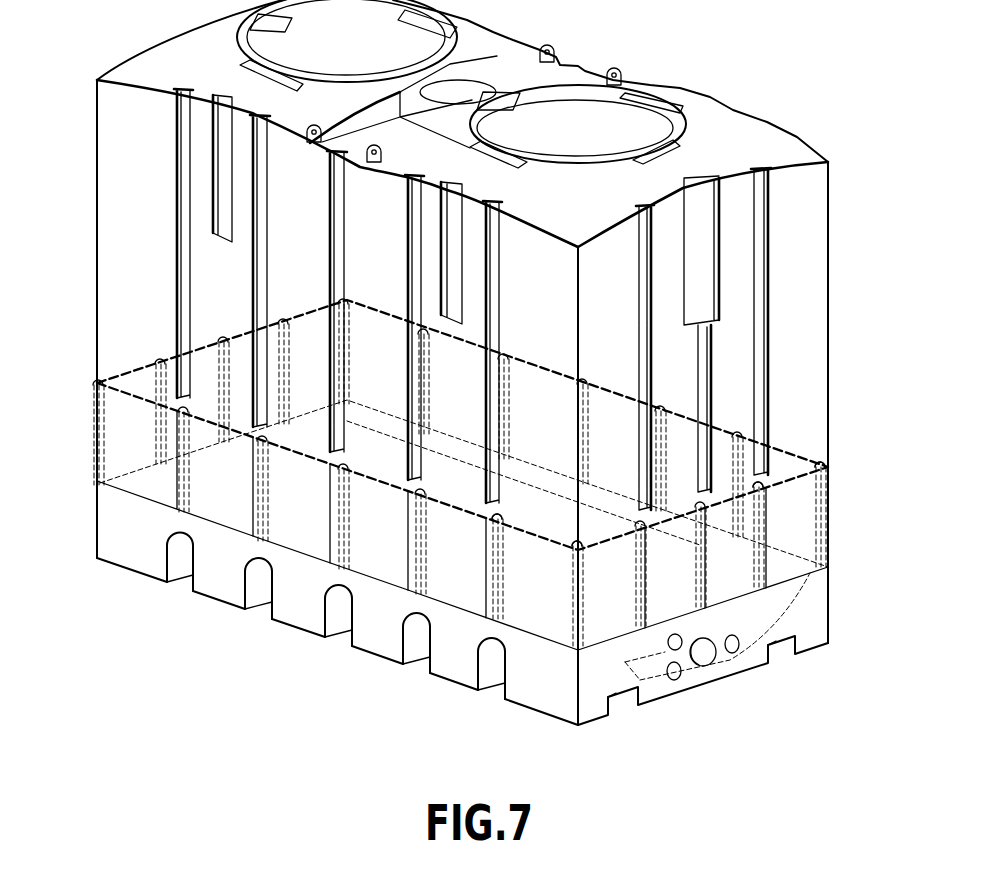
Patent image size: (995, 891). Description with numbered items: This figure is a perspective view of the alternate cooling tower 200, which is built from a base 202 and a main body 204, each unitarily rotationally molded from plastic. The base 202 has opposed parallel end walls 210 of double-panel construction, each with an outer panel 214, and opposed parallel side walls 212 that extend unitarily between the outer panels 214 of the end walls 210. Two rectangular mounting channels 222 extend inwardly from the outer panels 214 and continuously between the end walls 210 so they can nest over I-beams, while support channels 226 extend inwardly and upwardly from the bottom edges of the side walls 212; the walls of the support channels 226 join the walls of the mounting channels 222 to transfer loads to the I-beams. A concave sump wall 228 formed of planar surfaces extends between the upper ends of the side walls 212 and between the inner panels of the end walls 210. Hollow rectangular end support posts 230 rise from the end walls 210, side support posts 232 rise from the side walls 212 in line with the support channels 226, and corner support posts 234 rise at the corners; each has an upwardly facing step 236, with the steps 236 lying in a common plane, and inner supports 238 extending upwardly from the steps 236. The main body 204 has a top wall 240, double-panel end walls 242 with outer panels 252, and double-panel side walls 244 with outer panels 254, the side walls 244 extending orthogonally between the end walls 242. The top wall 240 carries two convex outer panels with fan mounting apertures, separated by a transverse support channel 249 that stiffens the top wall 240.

The cooling tower 200 is at (862, 376).
The base 202 is at (827, 592).
The main body 204 is at (850, 266).
The end walls 210 is at (733, 672).
The side walls 212 is at (296, 640).
The outer panel 214 is at (818, 608).
The rectangular mounting channels 222 is at (788, 650).
The support channels 226 is at (410, 658).
The sump wall 228 is at (285, 523).
The end support posts 230 is at (768, 516).
The side support posts 232 is at (262, 478).
The corner support posts 234 is at (95, 412).
The step 236 is at (416, 494).
The inner supports 238 is at (497, 520).
The top wall 240 is at (750, 126).
The end walls 242 is at (822, 198).
The side walls 244 is at (100, 217).
The transverse support channel 249 is at (404, 126).
The outer panels 252 is at (604, 546).
The outer panels 254 is at (456, 518).